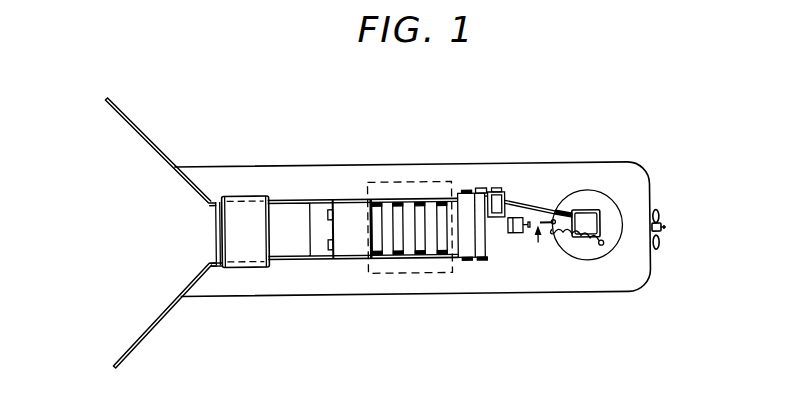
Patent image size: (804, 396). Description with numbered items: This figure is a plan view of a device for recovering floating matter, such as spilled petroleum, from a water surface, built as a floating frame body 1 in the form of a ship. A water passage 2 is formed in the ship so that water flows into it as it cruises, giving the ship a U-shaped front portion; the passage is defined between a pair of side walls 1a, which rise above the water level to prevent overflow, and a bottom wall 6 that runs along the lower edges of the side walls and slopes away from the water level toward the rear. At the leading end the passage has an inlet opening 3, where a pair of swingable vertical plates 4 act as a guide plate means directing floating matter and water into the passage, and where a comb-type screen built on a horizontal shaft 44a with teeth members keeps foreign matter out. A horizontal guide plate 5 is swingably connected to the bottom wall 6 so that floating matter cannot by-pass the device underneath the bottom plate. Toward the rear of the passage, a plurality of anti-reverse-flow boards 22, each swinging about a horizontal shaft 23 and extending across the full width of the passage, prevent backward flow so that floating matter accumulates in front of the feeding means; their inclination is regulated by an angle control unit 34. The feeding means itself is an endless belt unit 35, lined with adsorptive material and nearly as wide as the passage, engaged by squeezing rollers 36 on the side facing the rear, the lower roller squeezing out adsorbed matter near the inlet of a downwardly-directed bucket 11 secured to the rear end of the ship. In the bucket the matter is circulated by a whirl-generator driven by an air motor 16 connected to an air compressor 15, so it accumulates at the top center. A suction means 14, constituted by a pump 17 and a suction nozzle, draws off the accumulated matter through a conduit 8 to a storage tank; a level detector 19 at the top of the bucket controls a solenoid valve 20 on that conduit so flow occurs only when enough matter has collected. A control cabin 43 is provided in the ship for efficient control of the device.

The floating frame body 1 is at (306, 302).
The side walls 1a is at (283, 199).
The water passage 2 is at (350, 250).
The inlet opening 3 is at (213, 229).
The vertical plates 4 is at (157, 143).
The horizontal guide plate 5 is at (318, 208).
The bottom wall 6 is at (350, 210).
The conduit 8 is at (571, 211).
The downwardly-directed bucket 11 is at (597, 196).
The suction means 14 is at (539, 246).
The air compressor 15 is at (509, 196).
The air motor 16 is at (600, 228).
The pump 17 is at (515, 235).
The level detector 19 is at (602, 248).
The solenoid valve 20 is at (553, 234).
The anti-reverse-flow boards 22 is at (400, 200).
The horizontal shaft 23 is at (423, 258).
The angle control unit 34 is at (420, 176).
The endless belt unit 35 is at (466, 259).
The squeezing rollers 36 is at (482, 189).
The control cabin 43 is at (244, 256).
The horizontal shaft 44a is at (212, 250).